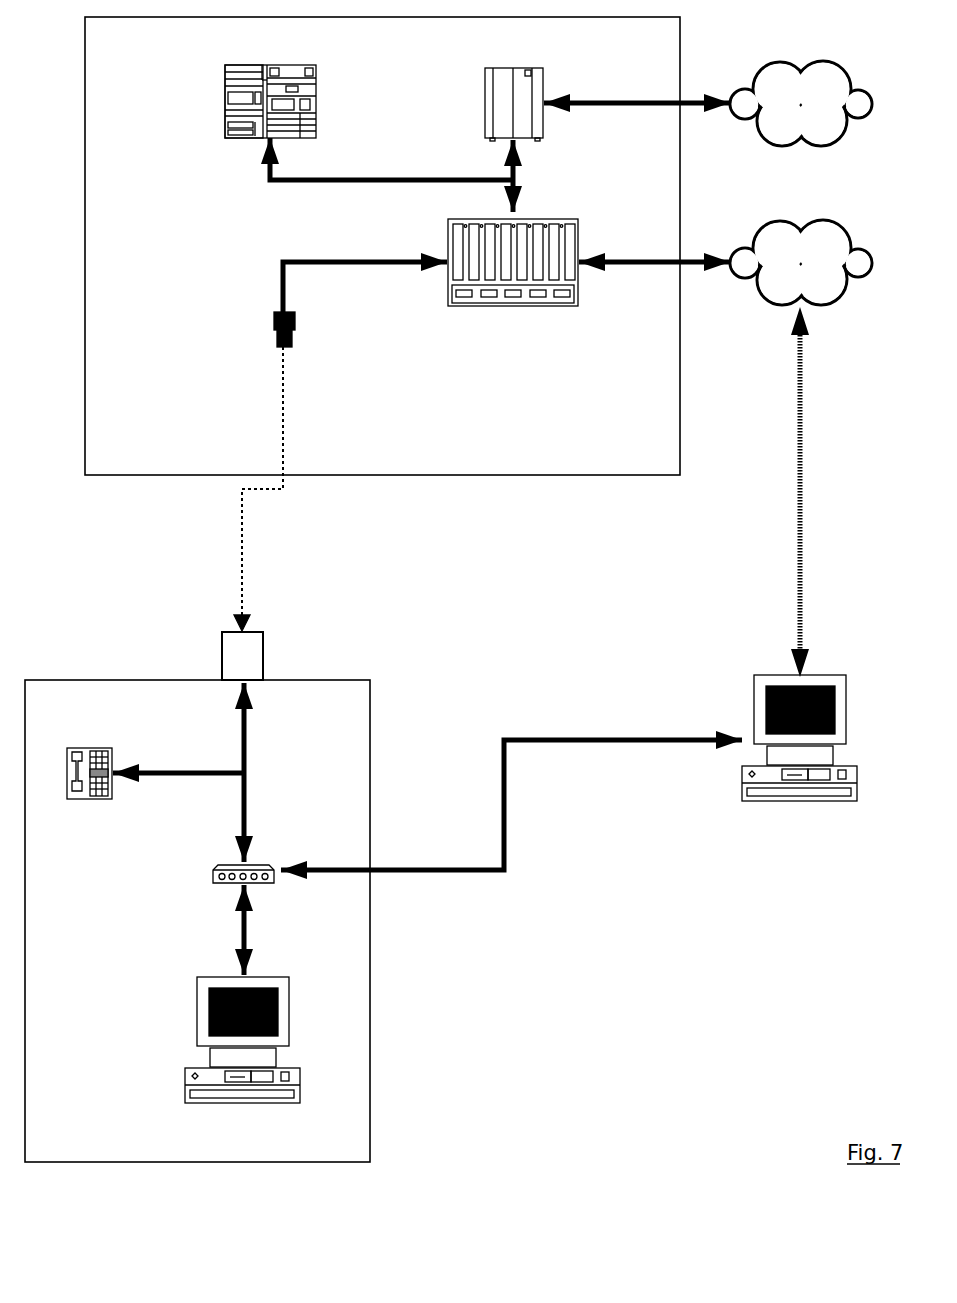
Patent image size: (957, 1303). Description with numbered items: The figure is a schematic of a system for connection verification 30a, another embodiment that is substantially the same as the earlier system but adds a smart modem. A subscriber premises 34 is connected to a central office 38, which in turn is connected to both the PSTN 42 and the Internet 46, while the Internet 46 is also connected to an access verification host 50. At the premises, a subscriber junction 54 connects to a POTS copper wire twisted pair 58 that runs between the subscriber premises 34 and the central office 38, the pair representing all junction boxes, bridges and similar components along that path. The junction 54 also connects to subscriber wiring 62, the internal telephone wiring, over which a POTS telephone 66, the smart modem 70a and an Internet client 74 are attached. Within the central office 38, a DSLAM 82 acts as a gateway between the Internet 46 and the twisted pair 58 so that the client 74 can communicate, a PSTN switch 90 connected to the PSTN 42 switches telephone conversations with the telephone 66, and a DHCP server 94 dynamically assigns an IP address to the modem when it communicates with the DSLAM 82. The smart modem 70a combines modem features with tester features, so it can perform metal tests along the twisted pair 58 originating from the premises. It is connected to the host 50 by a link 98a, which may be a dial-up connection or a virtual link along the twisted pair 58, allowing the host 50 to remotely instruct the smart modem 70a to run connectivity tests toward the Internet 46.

The system for connection verification 30a is at (682, 1010).
The subscriber premises 34 is at (380, 1098).
The central office 38 is at (79, 452).
The PSTN 42 is at (789, 114).
The Internet 46 is at (789, 274).
The access verification host 50 is at (838, 810).
The subscriber junction 54 is at (231, 670).
The POTS copper wire twisted pair 58 is at (234, 538).
The subscriber wiring 62 is at (230, 722).
The POTS telephone 66 is at (85, 810).
The smart modem 70a is at (200, 881).
The Internet client 74 is at (185, 1005).
The DSLAM 82 is at (438, 312).
The PSTN switch 90 is at (475, 112).
The DHCP server 94 is at (214, 109).
The link 98a is at (477, 888).